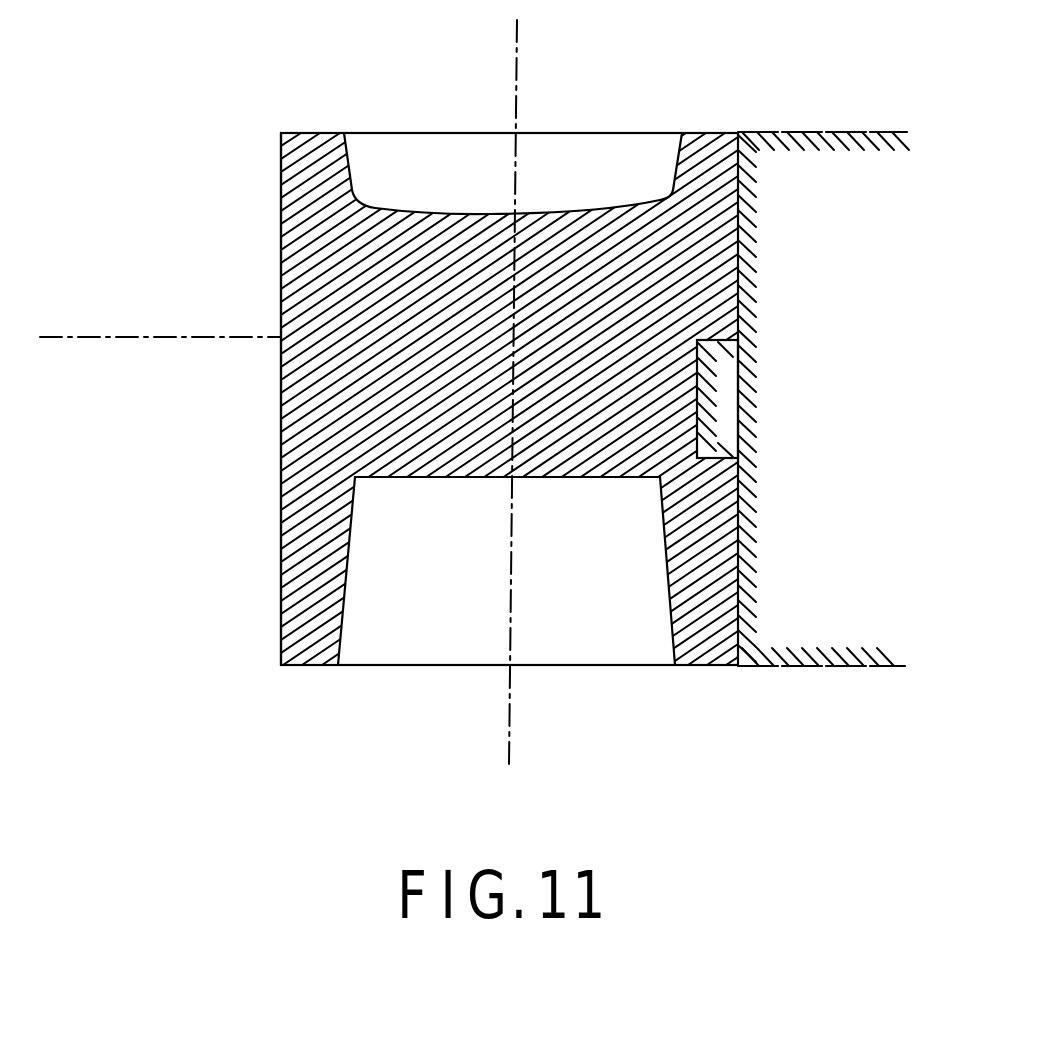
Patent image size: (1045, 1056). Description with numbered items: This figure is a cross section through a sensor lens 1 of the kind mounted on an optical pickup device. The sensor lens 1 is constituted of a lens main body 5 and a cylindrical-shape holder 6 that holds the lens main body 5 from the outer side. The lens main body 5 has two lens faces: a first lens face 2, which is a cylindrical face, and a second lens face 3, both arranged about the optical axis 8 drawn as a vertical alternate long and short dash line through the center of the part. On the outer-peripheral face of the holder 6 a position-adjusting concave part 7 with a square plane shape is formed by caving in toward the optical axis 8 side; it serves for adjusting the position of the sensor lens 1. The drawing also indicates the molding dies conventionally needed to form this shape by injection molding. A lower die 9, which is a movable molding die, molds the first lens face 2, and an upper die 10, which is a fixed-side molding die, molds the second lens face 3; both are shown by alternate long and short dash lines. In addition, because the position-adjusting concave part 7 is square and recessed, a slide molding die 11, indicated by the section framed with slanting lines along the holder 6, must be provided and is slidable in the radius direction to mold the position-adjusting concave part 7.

The sensor lens 1 is at (250, 127).
The first lens face 2 is at (562, 213).
The second lens face 3 is at (563, 477).
The lens main body 5 is at (398, 207).
The holder 6 is at (281, 292).
The position-adjusting concave part 7 is at (724, 394).
The optical axis 8 is at (516, 80).
The lower die 9 is at (158, 340).
The upper die 10 is at (125, 330).
The slide molding die 11 is at (795, 127).